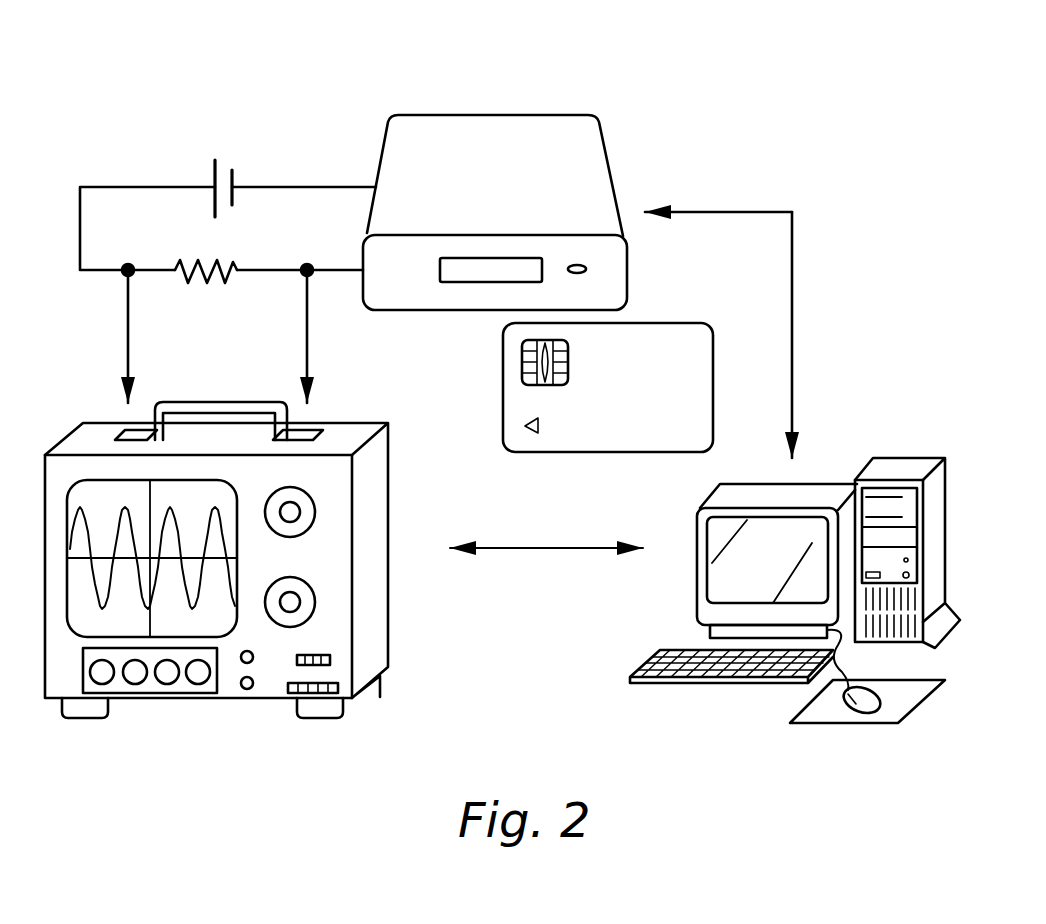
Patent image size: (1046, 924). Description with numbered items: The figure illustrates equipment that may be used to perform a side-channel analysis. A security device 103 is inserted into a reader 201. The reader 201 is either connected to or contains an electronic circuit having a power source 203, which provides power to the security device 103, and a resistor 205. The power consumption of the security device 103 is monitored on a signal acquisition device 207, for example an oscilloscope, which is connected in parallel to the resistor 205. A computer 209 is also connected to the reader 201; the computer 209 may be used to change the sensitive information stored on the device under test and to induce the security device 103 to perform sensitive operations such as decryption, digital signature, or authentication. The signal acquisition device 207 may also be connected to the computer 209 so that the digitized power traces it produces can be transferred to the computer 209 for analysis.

The security device 103 is at (714, 356).
The reader 201 is at (362, 139).
The power source 203 is at (213, 152).
The resistor 205 is at (205, 290).
The signal acquisition device 207 is at (214, 719).
The computer 209 is at (866, 452).